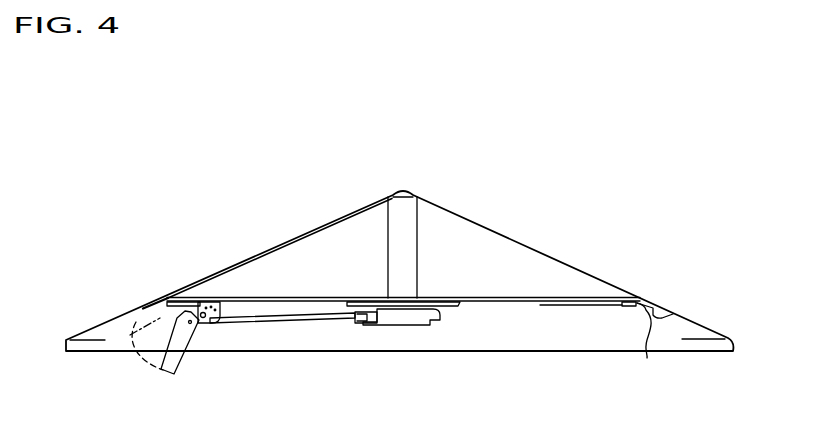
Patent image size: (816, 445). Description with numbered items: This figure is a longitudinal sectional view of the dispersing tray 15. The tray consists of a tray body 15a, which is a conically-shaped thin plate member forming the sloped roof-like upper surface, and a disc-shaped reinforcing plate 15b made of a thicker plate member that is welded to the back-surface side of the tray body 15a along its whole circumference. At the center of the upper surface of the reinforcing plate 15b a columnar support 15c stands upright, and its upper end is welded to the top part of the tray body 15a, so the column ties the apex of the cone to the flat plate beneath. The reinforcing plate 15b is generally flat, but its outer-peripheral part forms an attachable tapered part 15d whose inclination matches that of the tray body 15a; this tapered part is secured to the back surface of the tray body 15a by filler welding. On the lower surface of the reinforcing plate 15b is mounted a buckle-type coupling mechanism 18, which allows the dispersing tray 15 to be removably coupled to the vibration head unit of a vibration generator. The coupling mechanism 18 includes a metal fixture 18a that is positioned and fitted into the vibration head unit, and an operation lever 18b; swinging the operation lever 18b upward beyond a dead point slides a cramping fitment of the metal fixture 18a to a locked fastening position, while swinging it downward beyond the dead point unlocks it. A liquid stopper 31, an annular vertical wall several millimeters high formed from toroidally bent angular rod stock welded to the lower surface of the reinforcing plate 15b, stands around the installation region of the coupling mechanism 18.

The dispersing tray 15 is at (525, 238).
The tray body 15a is at (273, 247).
The reinforcing plate 15b is at (523, 300).
The columnar support 15c is at (417, 260).
The attachable tapered part 15d is at (663, 313).
The liquid stopper 31 is at (650, 345).
The buckle-type coupling mechanism 18 is at (322, 329).
The metal fixture 18a is at (407, 325).
The operation lever 18b is at (175, 362).